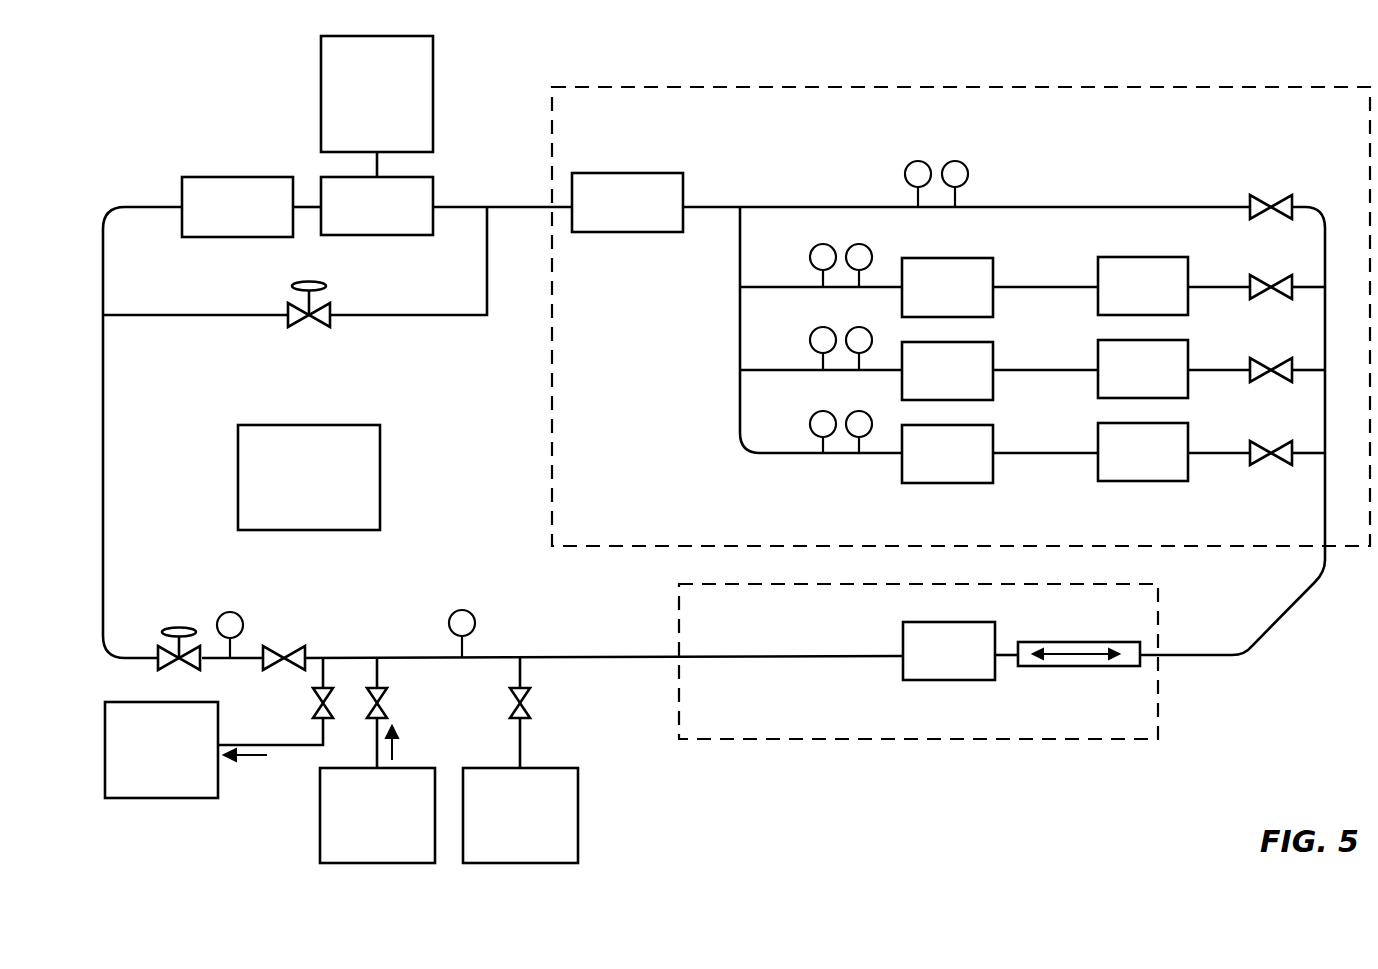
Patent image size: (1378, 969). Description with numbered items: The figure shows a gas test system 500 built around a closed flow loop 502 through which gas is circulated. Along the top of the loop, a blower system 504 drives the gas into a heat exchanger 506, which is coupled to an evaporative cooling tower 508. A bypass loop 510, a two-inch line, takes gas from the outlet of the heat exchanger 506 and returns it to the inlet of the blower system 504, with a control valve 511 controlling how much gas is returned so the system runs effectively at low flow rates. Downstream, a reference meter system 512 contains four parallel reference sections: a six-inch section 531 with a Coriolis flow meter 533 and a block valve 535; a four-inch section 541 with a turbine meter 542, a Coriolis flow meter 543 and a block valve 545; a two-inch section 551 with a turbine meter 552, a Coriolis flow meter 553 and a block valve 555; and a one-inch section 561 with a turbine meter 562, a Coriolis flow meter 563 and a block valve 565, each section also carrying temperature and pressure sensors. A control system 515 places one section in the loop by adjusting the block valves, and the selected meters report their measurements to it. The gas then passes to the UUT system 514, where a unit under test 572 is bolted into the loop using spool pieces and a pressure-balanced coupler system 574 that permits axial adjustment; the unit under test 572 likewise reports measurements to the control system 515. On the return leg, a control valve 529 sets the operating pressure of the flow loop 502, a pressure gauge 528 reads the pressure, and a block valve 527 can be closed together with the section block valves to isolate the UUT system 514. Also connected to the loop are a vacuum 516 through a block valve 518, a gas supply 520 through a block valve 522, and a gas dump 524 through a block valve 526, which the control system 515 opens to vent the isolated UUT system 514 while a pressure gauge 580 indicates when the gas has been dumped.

The gas test system 500 is at (768, 818).
The flow loop 502 is at (142, 205).
The blower system 504 is at (228, 177).
The heat exchanger 506 is at (412, 237).
The evaporative cooling tower 508 is at (359, 141).
The bypass loop 510 is at (420, 316).
The control valve 511 is at (302, 285).
The reference meter system 512 is at (948, 86).
The unit under test (UUT) system 514 is at (855, 736).
The control system 515 is at (291, 519).
The vacuum 516 is at (502, 850).
The block valve 518 is at (533, 703).
The gas supply 520 is at (359, 850).
The block valve 522 is at (388, 703).
The gas dump 524 is at (143, 785).
The block valve 526 is at (316, 703).
The block valve 527 is at (292, 645).
The pressure gauge 528 is at (236, 612).
The control valve 529 is at (183, 628).
The reference section 531 is at (1212, 205).
The Coriolis flow meter 533 is at (628, 233).
The block valve 535 is at (1275, 193).
The reference section 541 is at (1088, 285).
The turbine meter 542 is at (948, 258).
The Coriolis flow meter 543 is at (1188, 258).
The block valve 545 is at (1265, 275).
The reference section 551 is at (1080, 368).
The turbine meter 552 is at (990, 342).
The Coriolis flow meter 553 is at (1188, 341).
The block valve 555 is at (1265, 356).
The reference section 561 is at (1080, 451).
The turbine meter 562 is at (990, 425).
The Coriolis flow meter 563 is at (1188, 424).
The block valve 565 is at (1265, 440).
The unit under test (UUT) 572 is at (950, 682).
The coupler system 574 is at (1078, 667).
The pressure gauge 580 is at (468, 611).